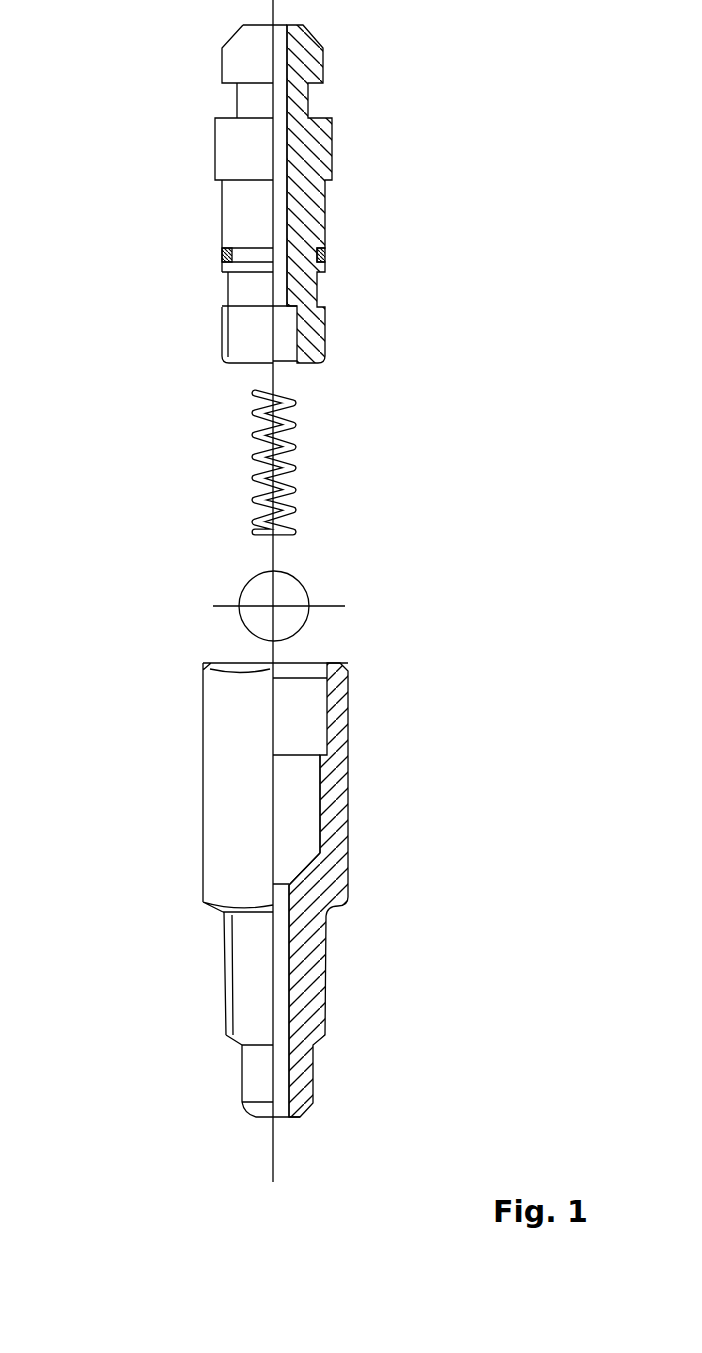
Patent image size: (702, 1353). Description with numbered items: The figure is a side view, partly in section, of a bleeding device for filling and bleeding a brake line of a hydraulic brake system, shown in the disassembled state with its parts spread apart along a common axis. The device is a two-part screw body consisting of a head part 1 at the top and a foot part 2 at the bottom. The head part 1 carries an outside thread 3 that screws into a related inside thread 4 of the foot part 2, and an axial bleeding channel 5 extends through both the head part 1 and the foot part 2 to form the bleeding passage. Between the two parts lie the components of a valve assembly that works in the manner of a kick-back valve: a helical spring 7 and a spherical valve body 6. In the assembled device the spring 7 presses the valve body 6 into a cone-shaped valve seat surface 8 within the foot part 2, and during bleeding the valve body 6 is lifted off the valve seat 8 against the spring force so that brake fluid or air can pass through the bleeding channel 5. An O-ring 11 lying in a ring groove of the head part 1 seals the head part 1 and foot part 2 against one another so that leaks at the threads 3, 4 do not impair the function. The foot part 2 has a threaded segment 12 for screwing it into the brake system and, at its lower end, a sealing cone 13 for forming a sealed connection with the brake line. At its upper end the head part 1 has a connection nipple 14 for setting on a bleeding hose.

The head part 1 is at (307, 198).
The foot part 2 is at (223, 823).
The outside thread 3 is at (330, 330).
The inside thread 4 is at (325, 790).
The axial bleeding channel 5 is at (277, 123).
The spherical valve body 6 is at (258, 590).
The helical spring 7 is at (295, 443).
The cone-shaped valve seat surface 8 is at (307, 872).
The O-ring 11 is at (222, 255).
The threaded segment 12 is at (228, 987).
The sealing cone 13 is at (242, 1110).
The connection nipple 14 is at (233, 58).